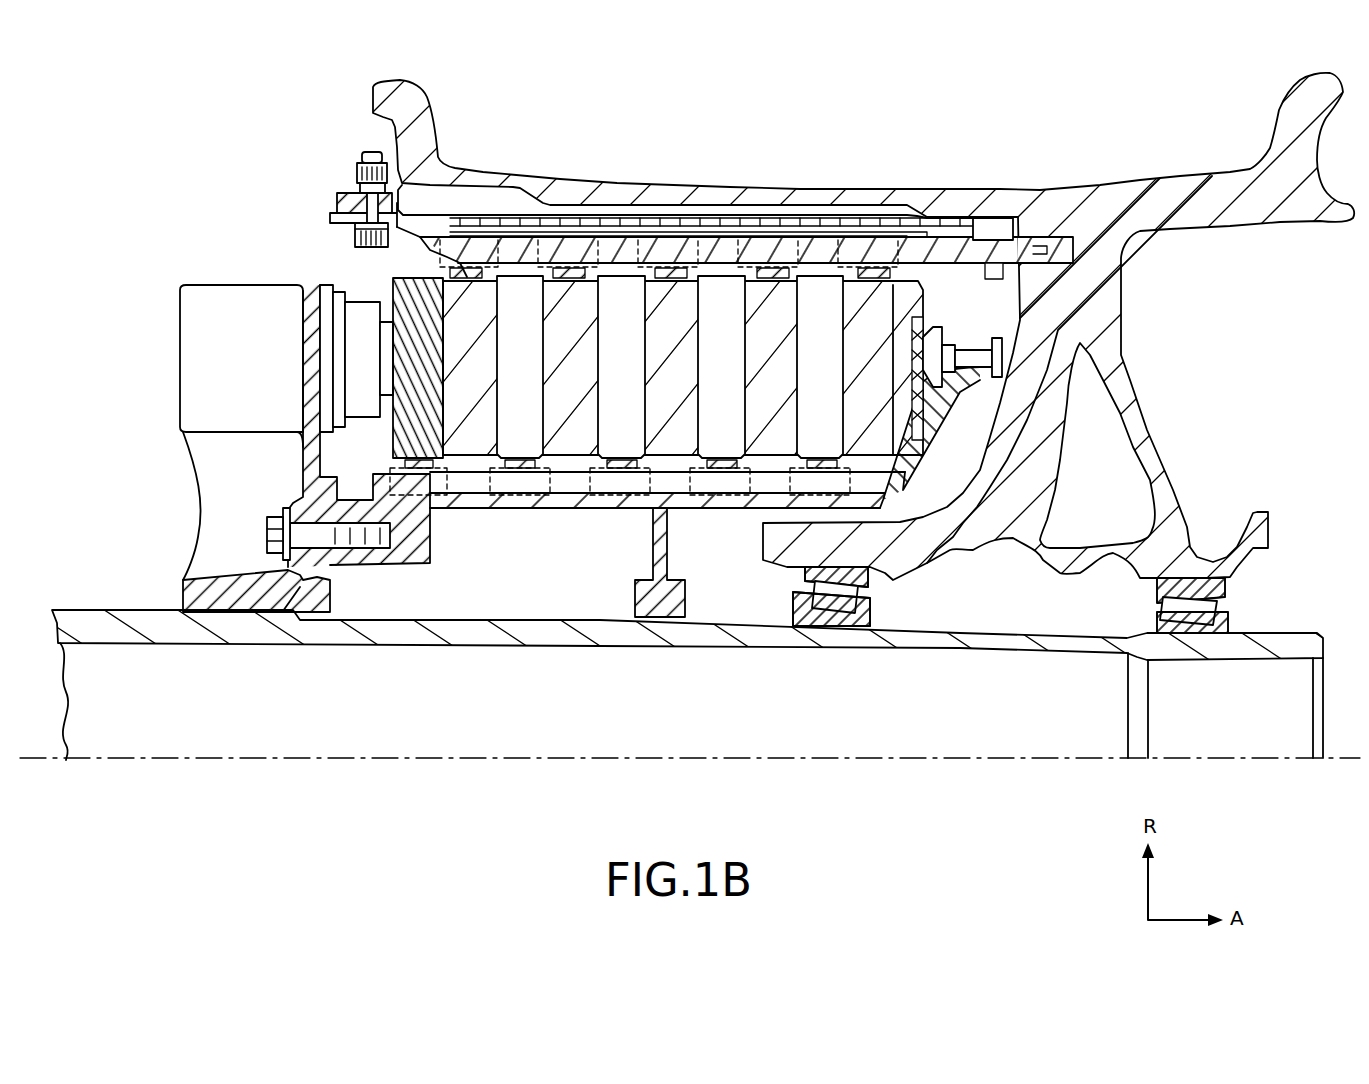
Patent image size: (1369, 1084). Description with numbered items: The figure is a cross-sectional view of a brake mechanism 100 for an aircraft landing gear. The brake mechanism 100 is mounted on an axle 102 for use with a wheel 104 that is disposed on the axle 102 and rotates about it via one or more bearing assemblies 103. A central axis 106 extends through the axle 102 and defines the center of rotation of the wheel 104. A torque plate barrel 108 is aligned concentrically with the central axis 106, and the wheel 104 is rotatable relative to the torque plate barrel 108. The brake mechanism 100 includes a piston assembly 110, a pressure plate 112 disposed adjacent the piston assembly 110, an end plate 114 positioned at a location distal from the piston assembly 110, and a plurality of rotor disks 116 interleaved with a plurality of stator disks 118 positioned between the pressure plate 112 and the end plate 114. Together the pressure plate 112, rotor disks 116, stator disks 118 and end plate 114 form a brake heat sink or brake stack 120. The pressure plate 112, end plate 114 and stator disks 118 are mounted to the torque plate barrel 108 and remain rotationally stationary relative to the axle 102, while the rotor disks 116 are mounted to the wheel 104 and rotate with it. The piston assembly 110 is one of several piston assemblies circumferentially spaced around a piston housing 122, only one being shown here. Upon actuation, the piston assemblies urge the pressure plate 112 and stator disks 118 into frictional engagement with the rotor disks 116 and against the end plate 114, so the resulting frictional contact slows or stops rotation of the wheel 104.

The brake mechanism 100 is at (178, 146).
The axle 102 is at (993, 648).
The bearing assemblies 103 is at (1193, 594).
The wheel 104 is at (1108, 306).
The central axis 106 is at (943, 762).
The torque plate barrel 108 is at (496, 522).
The piston assembly 110 is at (268, 257).
The pressure plate 112 is at (391, 283).
The end plate 114 is at (918, 298).
The rotor disks 116 is at (473, 297).
The stator disks 118 is at (620, 280).
The brake stack 120 is at (781, 290).
The piston housing 122 is at (186, 349).